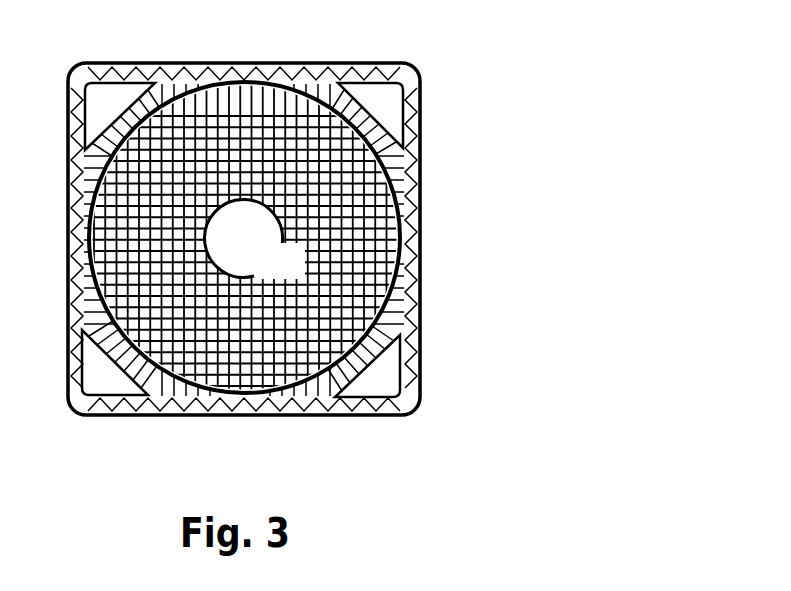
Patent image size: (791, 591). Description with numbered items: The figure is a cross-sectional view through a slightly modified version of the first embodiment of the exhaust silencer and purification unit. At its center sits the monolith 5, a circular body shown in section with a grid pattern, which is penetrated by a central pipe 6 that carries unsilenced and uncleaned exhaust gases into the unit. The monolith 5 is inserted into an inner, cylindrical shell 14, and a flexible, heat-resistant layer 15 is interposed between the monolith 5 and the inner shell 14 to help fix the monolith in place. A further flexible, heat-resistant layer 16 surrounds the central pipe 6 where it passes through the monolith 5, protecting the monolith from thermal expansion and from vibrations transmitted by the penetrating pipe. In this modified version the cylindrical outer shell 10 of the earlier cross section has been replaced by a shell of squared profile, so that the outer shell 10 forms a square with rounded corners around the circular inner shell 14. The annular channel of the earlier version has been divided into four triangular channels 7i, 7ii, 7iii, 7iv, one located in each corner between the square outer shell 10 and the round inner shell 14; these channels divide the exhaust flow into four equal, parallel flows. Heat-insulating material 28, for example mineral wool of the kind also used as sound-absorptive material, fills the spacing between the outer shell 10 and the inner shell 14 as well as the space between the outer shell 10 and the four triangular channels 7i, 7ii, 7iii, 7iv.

The monolith 5 is at (345, 150).
The central pipe 6 is at (244, 238).
The triangular channel 7i is at (112, 105).
The triangular channel 7ii is at (376, 107).
The triangular channel 7iii is at (106, 373).
The triangular channel 7iv is at (370, 375).
The outer shell 10 is at (185, 80).
The inner shell 14 is at (248, 80).
The flexible and heat-resistant layer 15 is at (310, 86).
The flexible and heat-resistant layer 16 is at (252, 257).
The heat-insulating material 28 is at (408, 191).